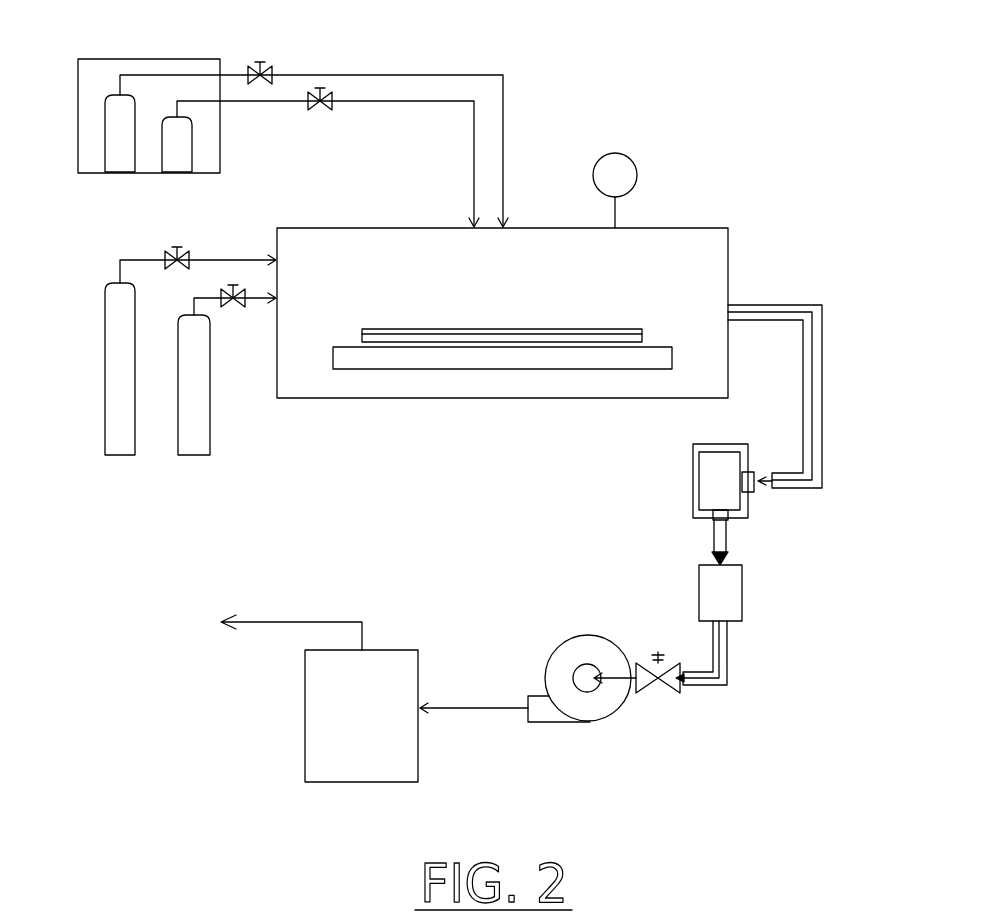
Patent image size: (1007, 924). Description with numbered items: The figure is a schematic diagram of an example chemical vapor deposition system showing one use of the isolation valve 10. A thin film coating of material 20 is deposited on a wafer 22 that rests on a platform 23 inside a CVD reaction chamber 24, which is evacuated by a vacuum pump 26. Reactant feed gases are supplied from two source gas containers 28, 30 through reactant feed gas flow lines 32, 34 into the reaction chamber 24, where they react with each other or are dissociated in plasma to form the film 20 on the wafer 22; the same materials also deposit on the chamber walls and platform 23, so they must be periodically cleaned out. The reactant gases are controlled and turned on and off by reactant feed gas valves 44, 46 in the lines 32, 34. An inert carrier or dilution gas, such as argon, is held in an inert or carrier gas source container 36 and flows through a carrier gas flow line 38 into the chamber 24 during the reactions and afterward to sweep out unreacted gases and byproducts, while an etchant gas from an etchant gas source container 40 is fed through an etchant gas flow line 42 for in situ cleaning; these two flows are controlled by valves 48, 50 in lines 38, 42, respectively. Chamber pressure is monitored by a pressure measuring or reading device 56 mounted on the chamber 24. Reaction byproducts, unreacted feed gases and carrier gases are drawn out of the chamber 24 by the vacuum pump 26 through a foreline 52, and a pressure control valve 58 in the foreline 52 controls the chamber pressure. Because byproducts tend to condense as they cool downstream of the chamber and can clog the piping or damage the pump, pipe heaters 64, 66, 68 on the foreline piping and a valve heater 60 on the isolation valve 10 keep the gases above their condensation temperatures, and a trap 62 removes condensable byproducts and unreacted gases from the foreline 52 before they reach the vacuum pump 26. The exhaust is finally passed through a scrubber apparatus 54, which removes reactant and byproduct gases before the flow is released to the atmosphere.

The isolation valve 10 is at (694, 468).
The thin film coating of material 20 is at (563, 329).
The wafer 22 is at (642, 340).
The platform 23 is at (672, 360).
The CVD reaction chamber 24 is at (523, 317).
The vacuum pump 26 is at (572, 640).
The source gas container 28 is at (105, 152).
The source gas container 30 is at (163, 155).
The reactant feed gas flow line 32 is at (412, 73).
The reactant feed gas flow line 34 is at (412, 101).
The inert or carrier gas source container 36 is at (105, 440).
The carrier gas flow line 38 is at (120, 260).
The etchant gas source container 40 is at (180, 435).
The etchant gas flow line 42 is at (200, 298).
The reactant feed gas valve 44 is at (272, 62).
The reactant feed gas valve 46 is at (310, 105).
The valve 48 is at (190, 255).
The valve 50 is at (248, 298).
The foreline 52 is at (812, 342).
The scrubber apparatus 54 is at (305, 725).
The pressure measuring or reading device 56 is at (637, 168).
The pressure control valve 58 is at (648, 693).
The valve heater 60 is at (693, 498).
The trap 62 is at (699, 587).
The pipe heater 64 is at (822, 378).
The pipe heater 66 is at (728, 536).
The pipe heater 68 is at (727, 663).